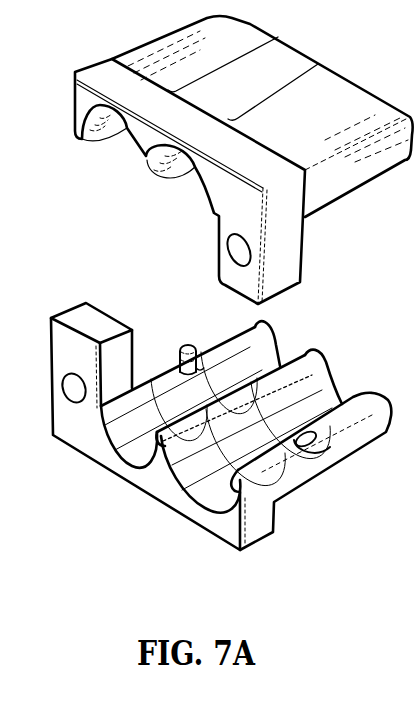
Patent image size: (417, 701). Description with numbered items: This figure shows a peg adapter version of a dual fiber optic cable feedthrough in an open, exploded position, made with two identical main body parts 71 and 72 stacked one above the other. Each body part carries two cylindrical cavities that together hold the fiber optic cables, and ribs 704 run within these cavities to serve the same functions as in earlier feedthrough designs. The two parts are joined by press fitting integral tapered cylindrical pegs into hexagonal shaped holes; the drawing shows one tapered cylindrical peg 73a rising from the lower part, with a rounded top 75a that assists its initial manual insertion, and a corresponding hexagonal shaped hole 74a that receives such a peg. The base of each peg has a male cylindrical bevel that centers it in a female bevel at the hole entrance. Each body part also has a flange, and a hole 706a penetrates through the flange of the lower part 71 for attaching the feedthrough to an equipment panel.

The main body part 72 is at (100, 63).
The main body part 71 is at (214, 404).
The ribs 704 is at (251, 318).
The rounded top 75a is at (182, 341).
The tapered cylindrical peg 73a is at (197, 367).
The hexagonal shaped hole 74a is at (325, 455).
The hole 706a is at (62, 399).